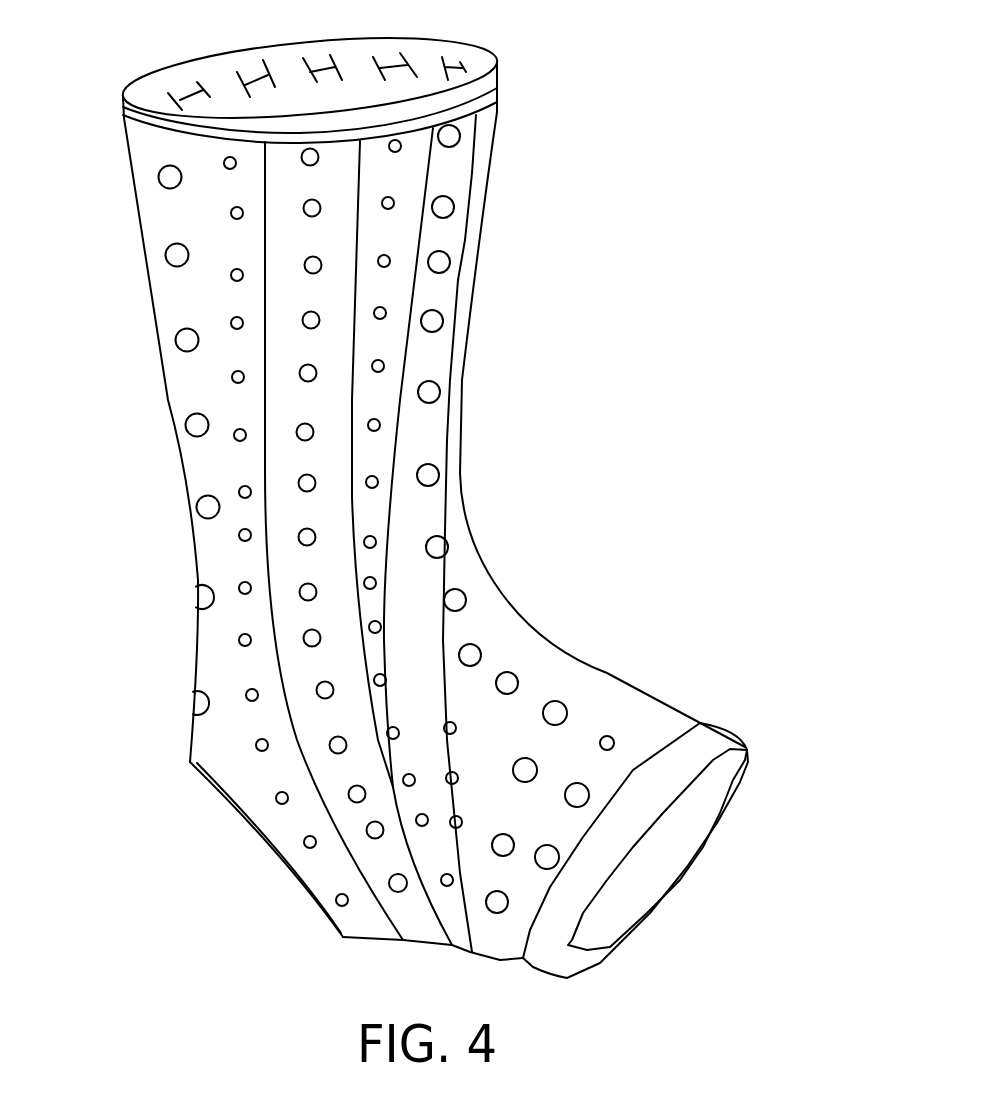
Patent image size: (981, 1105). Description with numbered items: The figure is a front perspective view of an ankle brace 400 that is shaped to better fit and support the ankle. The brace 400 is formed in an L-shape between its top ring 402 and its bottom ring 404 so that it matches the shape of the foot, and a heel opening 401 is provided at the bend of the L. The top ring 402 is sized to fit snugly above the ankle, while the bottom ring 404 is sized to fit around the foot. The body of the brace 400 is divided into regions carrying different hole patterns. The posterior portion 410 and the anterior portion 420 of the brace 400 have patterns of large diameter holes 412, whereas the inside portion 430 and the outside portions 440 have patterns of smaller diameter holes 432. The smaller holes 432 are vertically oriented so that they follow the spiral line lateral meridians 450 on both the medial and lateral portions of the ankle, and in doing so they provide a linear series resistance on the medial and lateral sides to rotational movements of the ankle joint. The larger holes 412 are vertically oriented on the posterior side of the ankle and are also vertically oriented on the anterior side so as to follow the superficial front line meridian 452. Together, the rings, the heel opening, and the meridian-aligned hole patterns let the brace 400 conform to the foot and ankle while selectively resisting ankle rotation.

The brace 400 is at (670, 113).
The heel opening 401 is at (247, 828).
The top ring 402 is at (500, 78).
The bottom ring 404 is at (723, 730).
The posterior portion 410 is at (143, 202).
The large diameter holes 412 is at (173, 252).
The anterior portion 420 is at (477, 240).
The inside portion 430 is at (282, 290).
The smaller diameter holes 432 is at (310, 322).
The outside portions 440 is at (215, 72).
The spiral line lateral meridians 450 is at (323, 663).
The superficial front line meridian 452 is at (424, 521).